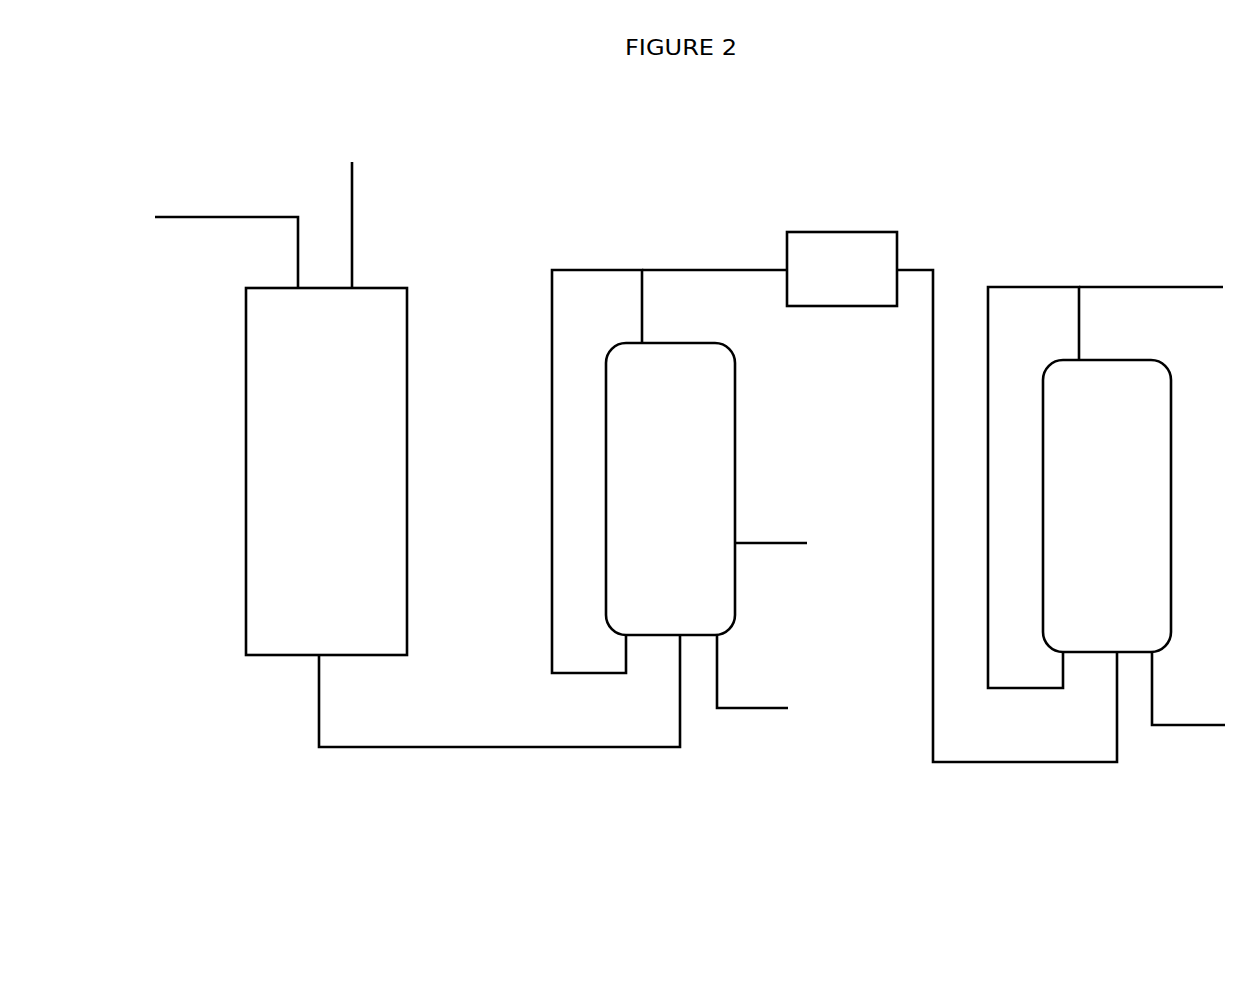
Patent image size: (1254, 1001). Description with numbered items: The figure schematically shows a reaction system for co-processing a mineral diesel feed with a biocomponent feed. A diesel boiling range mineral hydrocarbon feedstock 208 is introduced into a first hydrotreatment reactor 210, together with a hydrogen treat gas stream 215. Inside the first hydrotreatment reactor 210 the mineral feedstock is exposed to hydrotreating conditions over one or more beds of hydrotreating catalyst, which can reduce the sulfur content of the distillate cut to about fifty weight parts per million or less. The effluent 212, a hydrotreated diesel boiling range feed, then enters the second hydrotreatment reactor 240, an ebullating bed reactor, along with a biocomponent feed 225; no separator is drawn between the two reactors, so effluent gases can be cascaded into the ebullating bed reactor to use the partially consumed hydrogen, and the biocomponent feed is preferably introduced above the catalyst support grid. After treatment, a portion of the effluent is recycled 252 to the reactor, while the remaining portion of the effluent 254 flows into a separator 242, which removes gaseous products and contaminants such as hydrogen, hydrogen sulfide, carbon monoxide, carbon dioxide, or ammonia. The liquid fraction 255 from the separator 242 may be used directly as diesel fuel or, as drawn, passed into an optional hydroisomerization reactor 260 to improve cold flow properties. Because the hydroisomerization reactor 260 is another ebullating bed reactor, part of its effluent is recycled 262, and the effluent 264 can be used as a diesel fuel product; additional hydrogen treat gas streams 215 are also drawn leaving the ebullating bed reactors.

The diesel boiling range mineral hydrocarbon feedstock 208 is at (173, 235).
The first hydrotreatment reactor 210 is at (326, 471).
The effluent 212 is at (302, 709).
The hydrogen treat gas stream 215 is at (370, 235).
The biocomponent feed 225 is at (788, 562).
The second hydrotreatment reactor 240 is at (670, 489).
The separator 242 is at (842, 269).
The recycle 252 is at (588, 252).
The remaining portion of the effluent 254 is at (732, 252).
The liquid fraction 255 is at (1007, 780).
The hydroisomerization reactor 260 is at (1107, 506).
The recycle 262 is at (1023, 268).
The effluent 264 is at (1133, 268).